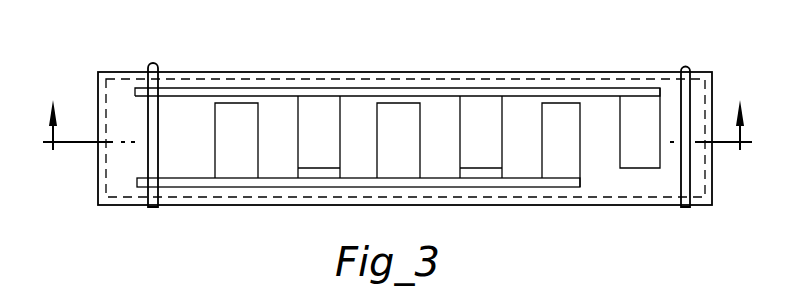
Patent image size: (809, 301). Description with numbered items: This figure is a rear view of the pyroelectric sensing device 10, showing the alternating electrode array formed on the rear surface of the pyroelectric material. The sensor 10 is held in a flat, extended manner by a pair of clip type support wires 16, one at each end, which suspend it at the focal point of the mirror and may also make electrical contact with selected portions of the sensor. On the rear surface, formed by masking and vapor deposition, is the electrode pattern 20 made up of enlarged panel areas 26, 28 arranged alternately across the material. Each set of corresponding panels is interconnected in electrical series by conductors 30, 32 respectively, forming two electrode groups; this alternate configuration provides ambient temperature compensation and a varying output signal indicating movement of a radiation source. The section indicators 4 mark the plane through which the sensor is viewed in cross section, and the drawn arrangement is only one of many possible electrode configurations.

The pyroelectric sensing device 10 is at (662, 70).
The support wires 16 is at (150, 157).
The serpentine strip 20 is at (428, 137).
The panel area 26 is at (317, 158).
The panel area 28 is at (238, 108).
The conductor 30 is at (175, 88).
The conductor 32 is at (195, 182).
The section line 4- 4 is at (397, 106).